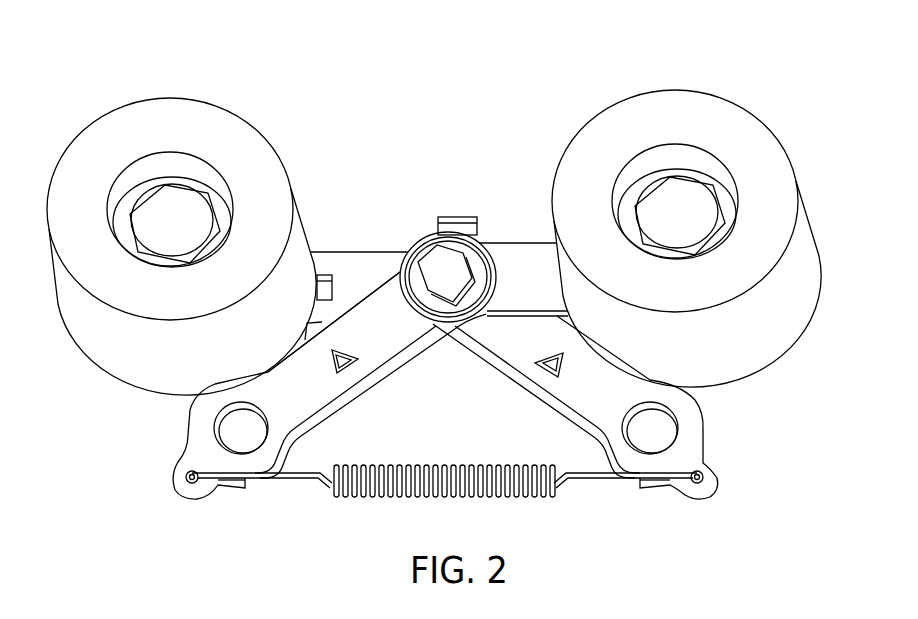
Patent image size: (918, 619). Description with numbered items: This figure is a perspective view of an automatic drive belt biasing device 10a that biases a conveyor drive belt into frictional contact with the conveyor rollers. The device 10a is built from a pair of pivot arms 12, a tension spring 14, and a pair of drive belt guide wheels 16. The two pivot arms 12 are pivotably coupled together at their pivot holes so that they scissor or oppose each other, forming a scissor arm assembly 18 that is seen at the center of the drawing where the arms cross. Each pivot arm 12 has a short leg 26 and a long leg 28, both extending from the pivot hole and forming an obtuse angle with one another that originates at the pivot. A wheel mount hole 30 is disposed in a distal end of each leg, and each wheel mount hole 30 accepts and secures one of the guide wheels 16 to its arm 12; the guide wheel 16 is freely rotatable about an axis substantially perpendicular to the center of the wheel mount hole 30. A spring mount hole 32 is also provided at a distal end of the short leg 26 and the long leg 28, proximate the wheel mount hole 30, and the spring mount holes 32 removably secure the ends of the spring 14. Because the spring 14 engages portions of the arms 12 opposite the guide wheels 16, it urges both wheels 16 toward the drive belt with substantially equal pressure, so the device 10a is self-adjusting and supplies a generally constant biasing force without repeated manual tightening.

The automatic drive belt biasing device 10a is at (664, 55).
The pivot arm 12 is at (444, 398).
The tension spring 14 is at (445, 463).
The drive belt guide wheel 16 is at (232, 122).
The scissor arm assembly 18 is at (455, 186).
The short leg 26 is at (342, 266).
The long leg 28 is at (323, 402).
The wheel mount hole 30 is at (258, 404).
The spring mount hole 32 is at (182, 493).